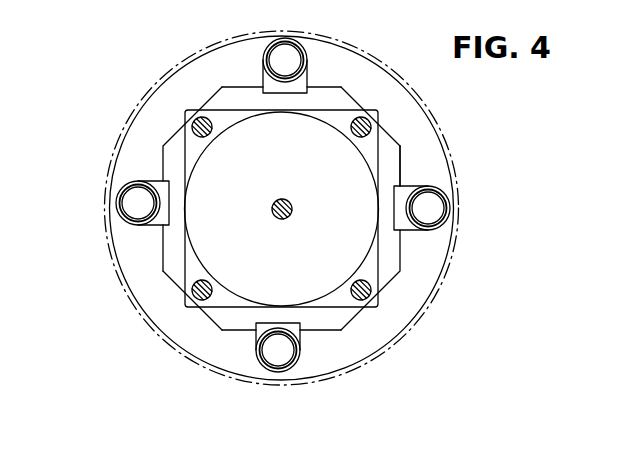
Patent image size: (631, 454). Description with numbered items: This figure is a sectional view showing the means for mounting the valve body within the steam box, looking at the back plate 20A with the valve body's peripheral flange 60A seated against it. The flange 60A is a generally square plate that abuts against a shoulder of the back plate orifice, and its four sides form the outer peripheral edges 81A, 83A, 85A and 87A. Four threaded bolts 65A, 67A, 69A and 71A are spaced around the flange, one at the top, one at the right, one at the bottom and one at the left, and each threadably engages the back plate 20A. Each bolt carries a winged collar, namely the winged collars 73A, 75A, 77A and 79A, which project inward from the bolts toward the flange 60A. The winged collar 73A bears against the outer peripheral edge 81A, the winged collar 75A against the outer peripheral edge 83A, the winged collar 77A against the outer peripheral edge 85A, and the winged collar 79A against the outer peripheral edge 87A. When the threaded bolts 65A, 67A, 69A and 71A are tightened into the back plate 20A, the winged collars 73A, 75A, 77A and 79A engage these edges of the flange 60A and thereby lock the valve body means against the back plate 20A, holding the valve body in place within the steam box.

The back plate 20A is at (172, 95).
The peripheral flange 60A is at (190, 145).
The outer peripheral edge 87A is at (169, 161).
The outer peripheral edge 81A is at (333, 95).
The outer peripheral edge 83A is at (387, 153).
The outer peripheral edge 85A is at (229, 318).
The threaded bolt 65A is at (281, 42).
The threaded bolt 67A is at (431, 204).
The threaded bolt 69A is at (303, 354).
The threaded bolt 71A is at (127, 210).
The winged collar 73A is at (307, 88).
The winged collar 75A is at (414, 232).
The winged collar 77A is at (299, 331).
The winged collar 79A is at (156, 226).